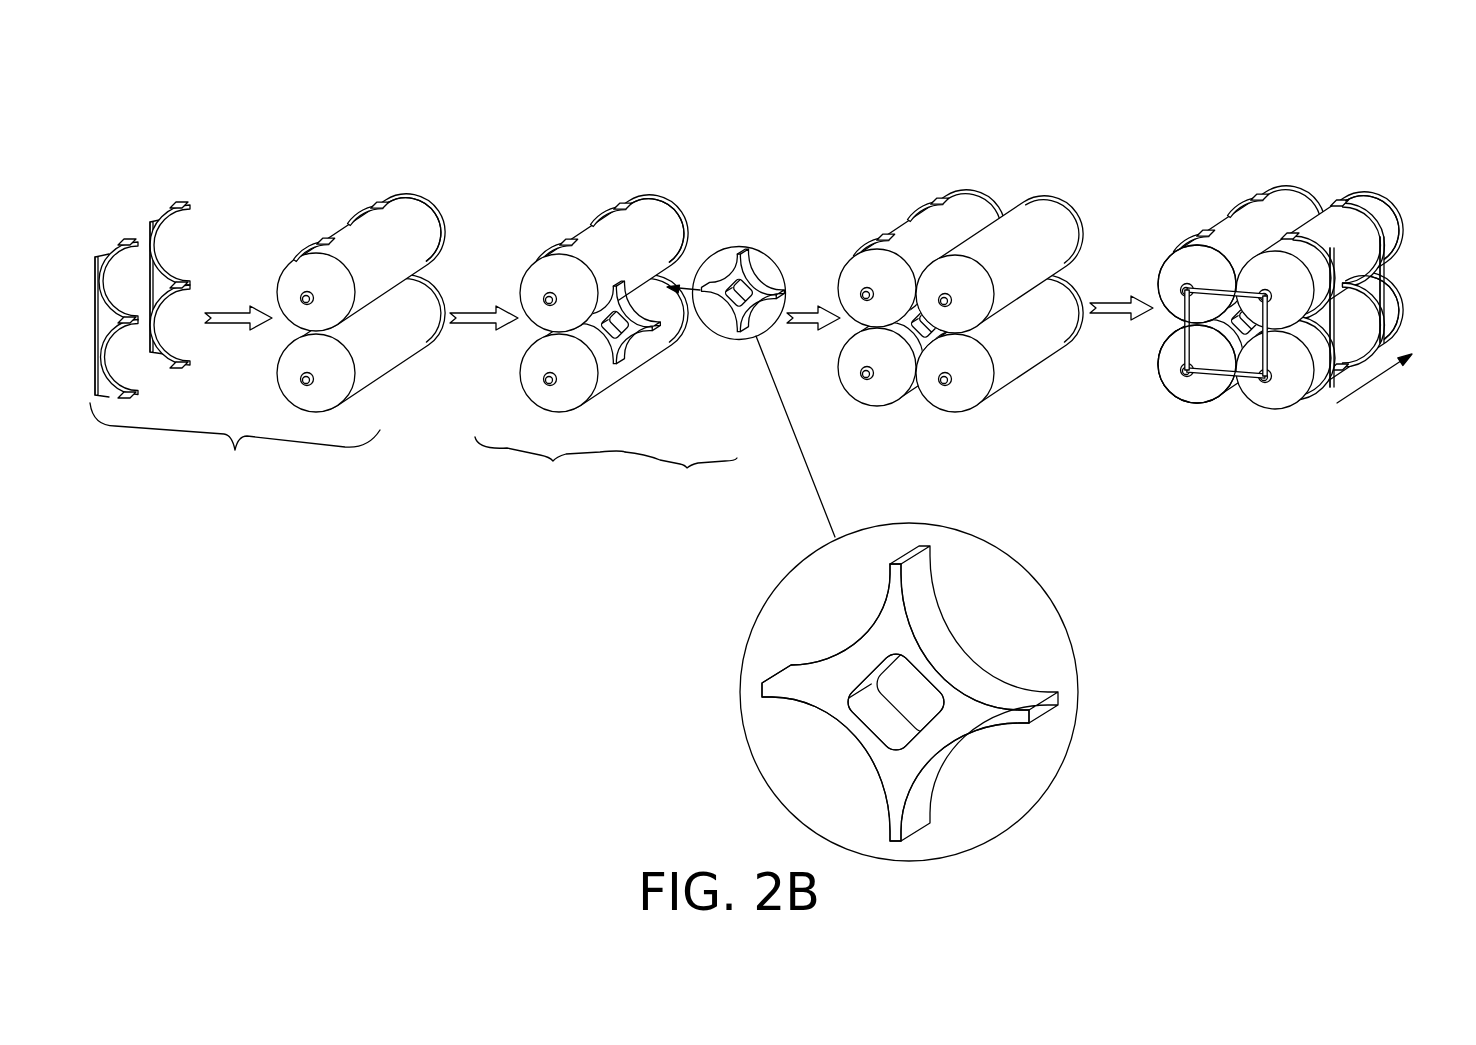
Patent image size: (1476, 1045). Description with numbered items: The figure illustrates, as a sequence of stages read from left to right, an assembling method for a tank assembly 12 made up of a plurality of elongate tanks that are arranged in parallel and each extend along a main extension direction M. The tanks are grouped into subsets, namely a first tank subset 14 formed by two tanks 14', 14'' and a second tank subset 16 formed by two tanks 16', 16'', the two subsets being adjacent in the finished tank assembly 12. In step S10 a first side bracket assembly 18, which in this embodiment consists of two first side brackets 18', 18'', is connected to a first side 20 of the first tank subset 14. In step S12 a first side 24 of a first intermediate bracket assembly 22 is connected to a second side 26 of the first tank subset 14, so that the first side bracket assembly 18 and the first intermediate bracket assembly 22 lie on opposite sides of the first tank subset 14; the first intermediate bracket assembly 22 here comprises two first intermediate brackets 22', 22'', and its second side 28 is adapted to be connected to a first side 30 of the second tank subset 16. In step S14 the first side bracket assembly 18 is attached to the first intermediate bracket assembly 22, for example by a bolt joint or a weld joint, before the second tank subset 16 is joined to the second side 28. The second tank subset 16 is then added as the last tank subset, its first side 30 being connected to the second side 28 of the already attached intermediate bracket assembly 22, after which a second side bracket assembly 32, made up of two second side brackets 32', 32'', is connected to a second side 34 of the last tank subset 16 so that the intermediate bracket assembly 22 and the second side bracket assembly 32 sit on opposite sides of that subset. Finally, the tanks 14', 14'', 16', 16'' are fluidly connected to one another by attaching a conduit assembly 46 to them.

The tank assembly 12 is at (1342, 166).
The first tank subset 14 is at (756, 357).
The tank of the first tank subset 14' is at (1195, 300).
The tank of the first tank subset 14'' is at (1210, 353).
The second tank subset 16 is at (1250, 391).
The tank of the second tank subset 16' is at (1320, 312).
The tank of the second tank subset 16'' is at (1320, 368).
The first side bracket assembly 18 is at (201, 264).
The first side bracket 18' is at (127, 266).
The first side bracket 18'' is at (201, 248).
The first side of the first tank subset 20 is at (366, 186).
The first intermediate bracket assembly 22 is at (737, 232).
The first intermediate bracket 22' is at (640, 355).
The first intermediate bracket 22'' is at (910, 666).
The first side of the first intermediate bracket assembly 24 is at (833, 617).
The second side of the first tank subset 26 is at (446, 190).
The second side of the first intermediate bracket assembly 28 is at (990, 633).
The first side of the second tank subset 30 is at (1015, 190).
The second side of the last tank subset 34 is at (1083, 190).
The second side bracket assembly 32 is at (1396, 238).
The second side bracket 32' is at (1387, 285).
The second side bracket 32'' is at (1372, 318).
The conduit assembly 46 is at (1220, 290).
The main extension direction M is at (1379, 378).
The step of connecting the first side bracket assembly S10 is at (235, 445).
The step of connecting the first intermediate bracket assembly S12 is at (550, 467).
The step of attaching the side bracket assembly to the intermediate bracket assembly S14 is at (681, 478).